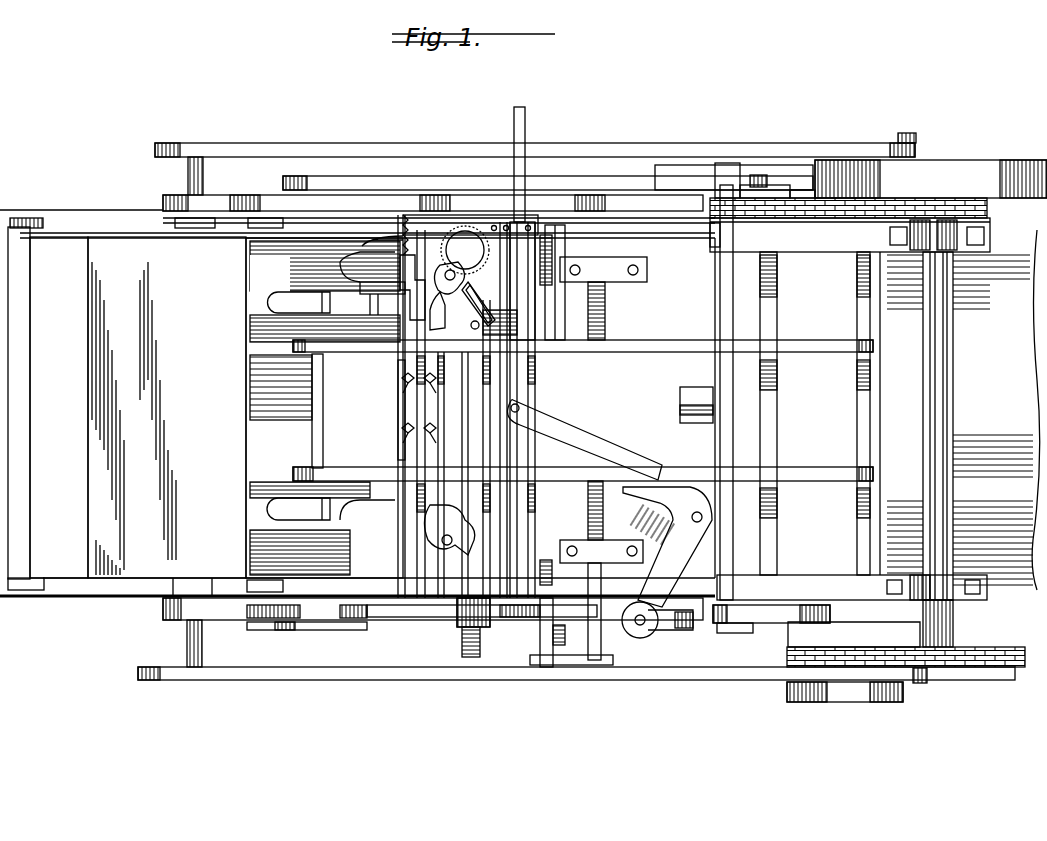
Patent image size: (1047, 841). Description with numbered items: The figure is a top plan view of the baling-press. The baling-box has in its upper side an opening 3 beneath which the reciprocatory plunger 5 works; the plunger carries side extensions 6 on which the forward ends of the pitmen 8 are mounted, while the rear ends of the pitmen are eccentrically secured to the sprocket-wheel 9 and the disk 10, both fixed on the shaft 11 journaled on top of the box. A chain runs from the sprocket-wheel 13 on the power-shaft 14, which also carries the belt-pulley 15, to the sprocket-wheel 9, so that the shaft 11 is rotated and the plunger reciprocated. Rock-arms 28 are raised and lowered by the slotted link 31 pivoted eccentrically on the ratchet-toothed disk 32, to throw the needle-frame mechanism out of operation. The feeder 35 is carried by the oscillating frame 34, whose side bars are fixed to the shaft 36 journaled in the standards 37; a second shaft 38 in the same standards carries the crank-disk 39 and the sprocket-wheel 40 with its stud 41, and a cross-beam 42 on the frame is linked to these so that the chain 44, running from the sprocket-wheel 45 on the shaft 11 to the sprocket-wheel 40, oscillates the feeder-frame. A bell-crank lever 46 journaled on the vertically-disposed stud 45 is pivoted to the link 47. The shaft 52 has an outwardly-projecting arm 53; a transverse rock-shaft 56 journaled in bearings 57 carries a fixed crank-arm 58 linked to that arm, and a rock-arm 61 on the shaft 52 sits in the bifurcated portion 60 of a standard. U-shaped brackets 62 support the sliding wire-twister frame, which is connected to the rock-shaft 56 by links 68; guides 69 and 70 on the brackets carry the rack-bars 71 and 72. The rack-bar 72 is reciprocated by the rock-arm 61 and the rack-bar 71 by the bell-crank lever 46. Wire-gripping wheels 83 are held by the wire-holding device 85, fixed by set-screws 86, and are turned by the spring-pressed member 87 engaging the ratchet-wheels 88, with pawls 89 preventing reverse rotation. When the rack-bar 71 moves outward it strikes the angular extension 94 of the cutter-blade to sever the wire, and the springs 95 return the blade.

The opening 3 is at (267, 257).
The reciprocatory plunger 5 is at (167, 407).
The extensions 6 is at (190, 176).
The pitmen 8 is at (580, 152).
The sprocket-wheel 9 is at (1007, 670).
The disk 10 is at (931, 179).
The shaft 11 is at (953, 320).
The sprocket-wheel 13 is at (907, 672).
The power-shaft 14 is at (853, 640).
The belt-pulley 15 is at (893, 700).
The rock-arms 28 is at (305, 186).
The link 31 is at (400, 180).
The disk 32 is at (707, 180).
The oscillating frame 34 is at (293, 474).
The feeder 35 is at (323, 414).
The shaft 36 is at (862, 375).
The standards 37 is at (837, 242).
The shaft 38 is at (777, 403).
The crank-disk 39 is at (770, 623).
The sprocket-wheel 40 is at (772, 200).
The stud 41 is at (760, 205).
The cross-beam 42 is at (720, 292).
The chain 44 is at (790, 207).
The sprocket-wheel 45 is at (703, 517).
The bell-crank lever 46 is at (607, 455).
The link 47 is at (665, 625).
The shaft 52 is at (513, 613).
The arm 53 is at (550, 658).
The rock-shaft 56 is at (580, 353).
The bearings 57 is at (617, 267).
The crank-arm 58 is at (583, 660).
The bifurcated portion 60 is at (463, 630).
The rock-arm 61 is at (480, 620).
The U-shaped brackets 62 is at (545, 225).
The links 68 is at (590, 340).
The guide 69 is at (510, 225).
The guide 70 is at (470, 222).
The rack-bar 71 is at (517, 267).
The rack-bar 72 is at (480, 215).
The wire-gripping wheels 83 is at (440, 287).
The wire-holding device 85 is at (405, 368).
The set-screws 86 is at (512, 407).
The spring-pressed member 87 is at (477, 317).
The ratchet-wheels 88 is at (410, 598).
The pawls 89 is at (521, 409).
The angular extension 94 is at (453, 217).
The springs 95 is at (362, 246).